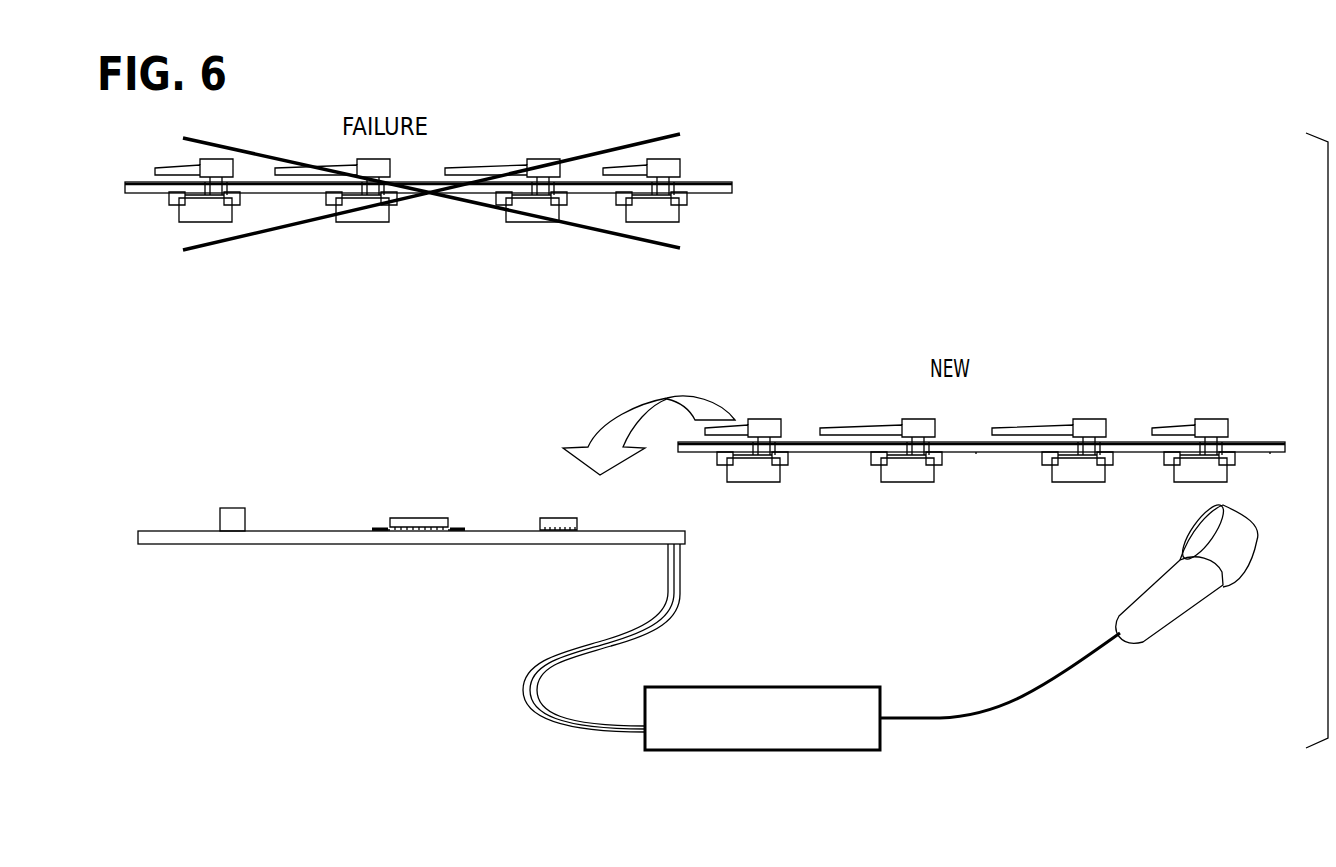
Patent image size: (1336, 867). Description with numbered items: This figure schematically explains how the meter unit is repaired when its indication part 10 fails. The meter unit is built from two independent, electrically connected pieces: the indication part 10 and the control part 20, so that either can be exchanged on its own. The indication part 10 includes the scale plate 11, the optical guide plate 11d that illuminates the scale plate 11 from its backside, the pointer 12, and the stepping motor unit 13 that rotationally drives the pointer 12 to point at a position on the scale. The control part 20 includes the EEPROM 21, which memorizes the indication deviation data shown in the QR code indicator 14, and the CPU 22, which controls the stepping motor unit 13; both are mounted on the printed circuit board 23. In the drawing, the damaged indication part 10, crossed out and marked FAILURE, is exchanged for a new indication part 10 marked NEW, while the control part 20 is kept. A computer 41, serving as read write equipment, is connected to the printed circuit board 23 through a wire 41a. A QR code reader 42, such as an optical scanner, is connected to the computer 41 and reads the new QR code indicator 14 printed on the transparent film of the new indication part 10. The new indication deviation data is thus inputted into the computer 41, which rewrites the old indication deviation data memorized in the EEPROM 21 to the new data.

The indication part 10 is at (503, 150).
The scale plate 11 is at (1250, 440).
The optical guide plate 11d is at (978, 454).
The pointer 12 is at (744, 426).
The stepping motor unit 13 is at (782, 482).
The QR code indicator 14 is at (1268, 454).
The control part 20 is at (411, 522).
The EEPROM 21 is at (546, 516).
The CPU 22 is at (438, 516).
The printed circuit board 23 is at (345, 547).
The computer 41 is at (808, 687).
The wire 41a is at (670, 620).
The QR code reader 42 is at (1193, 612).